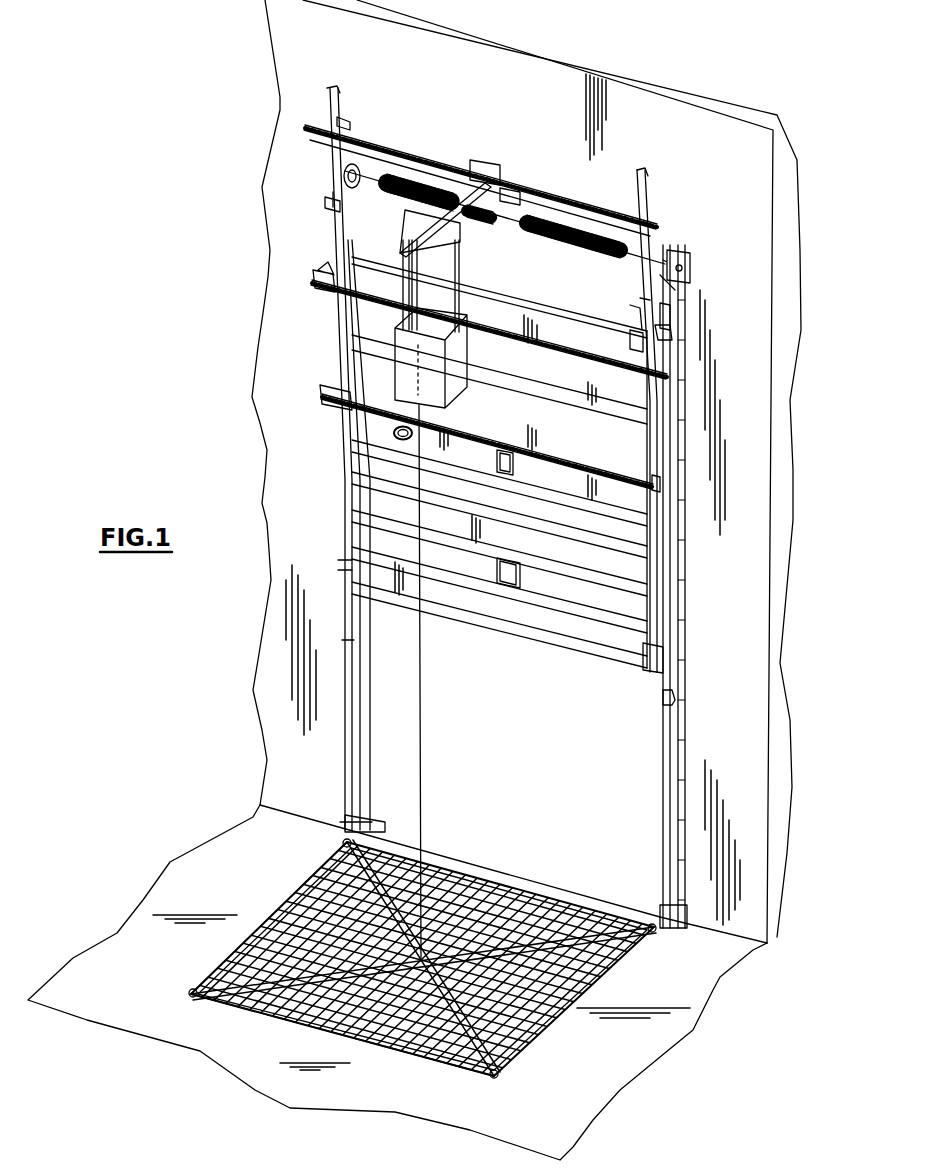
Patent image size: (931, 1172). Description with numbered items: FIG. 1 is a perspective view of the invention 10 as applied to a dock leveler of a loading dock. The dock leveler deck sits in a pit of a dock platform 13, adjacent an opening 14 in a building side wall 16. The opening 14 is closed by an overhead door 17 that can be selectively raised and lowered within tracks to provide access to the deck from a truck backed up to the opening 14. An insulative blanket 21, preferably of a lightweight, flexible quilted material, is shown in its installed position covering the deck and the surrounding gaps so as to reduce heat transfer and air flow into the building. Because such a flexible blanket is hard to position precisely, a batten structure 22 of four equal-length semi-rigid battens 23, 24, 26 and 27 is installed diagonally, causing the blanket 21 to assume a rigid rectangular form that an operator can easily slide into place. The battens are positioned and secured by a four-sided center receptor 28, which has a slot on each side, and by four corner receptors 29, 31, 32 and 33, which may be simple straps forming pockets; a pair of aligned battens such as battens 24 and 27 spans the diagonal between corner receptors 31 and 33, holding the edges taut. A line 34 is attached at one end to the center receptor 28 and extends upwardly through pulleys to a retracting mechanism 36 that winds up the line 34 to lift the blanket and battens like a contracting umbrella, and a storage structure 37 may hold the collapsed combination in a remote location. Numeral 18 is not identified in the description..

The invention 10 is at (738, 752).
The dock platform 13 is at (604, 1059).
The opening 14 is at (632, 735).
The building side wall 16 is at (741, 604).
The overhead door 17 is at (599, 529).
The hinge bracket 18 is at (657, 336).
The insulative blanket 21 is at (410, 966).
The batten structure 22 is at (370, 866).
The batten 23 is at (372, 843).
The batten 24 is at (520, 940).
The batten 26 is at (453, 1010).
The batten 27 is at (313, 943).
The center receptor 28 is at (427, 955).
The corner receptor 29 is at (348, 843).
The corner receptor 31 is at (633, 917).
The corner receptor 32 is at (500, 1068).
The corner receptor 33 is at (198, 990).
The line 34 is at (420, 697).
The retracting mechanism 36 is at (530, 170).
The storage structure 37 is at (497, 281).